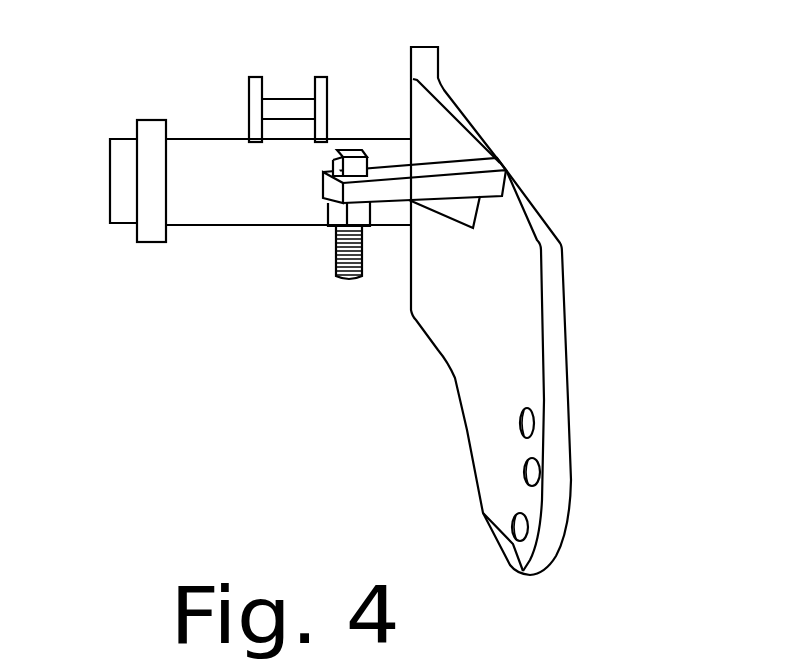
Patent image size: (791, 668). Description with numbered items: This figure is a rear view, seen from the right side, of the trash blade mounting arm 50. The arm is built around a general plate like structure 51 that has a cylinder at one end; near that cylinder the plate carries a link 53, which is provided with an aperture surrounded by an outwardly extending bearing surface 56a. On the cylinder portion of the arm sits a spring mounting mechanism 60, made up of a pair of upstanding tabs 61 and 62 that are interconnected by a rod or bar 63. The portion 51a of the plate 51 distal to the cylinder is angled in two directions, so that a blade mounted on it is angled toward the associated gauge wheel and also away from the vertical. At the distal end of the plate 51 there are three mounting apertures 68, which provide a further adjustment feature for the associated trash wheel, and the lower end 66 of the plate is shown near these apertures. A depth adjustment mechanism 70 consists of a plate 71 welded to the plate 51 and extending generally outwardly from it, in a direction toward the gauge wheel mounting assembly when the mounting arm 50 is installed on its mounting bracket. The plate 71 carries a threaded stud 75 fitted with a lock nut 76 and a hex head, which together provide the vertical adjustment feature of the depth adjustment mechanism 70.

The trash blade mounting arm 50 is at (472, 311).
The plate like structure 51 is at (546, 311).
The portion of the plate distal to the cylinder 51a is at (458, 116).
The link 53 is at (151, 243).
The outwardly extending bearing surface 56a is at (130, 224).
The spring mounting mechanism 60 is at (306, 74).
The upstanding tab 61 is at (328, 128).
The upstanding tab 62 is at (249, 111).
The rod or bar 63 is at (293, 110).
The lower tip of shank 66 is at (554, 513).
The mounting apertures 68 is at (532, 432).
The depth adjustment mechanism 70 is at (503, 160).
The plate 71 is at (443, 191).
The threaded stud 75 is at (333, 262).
The lock nut 76 is at (330, 204).